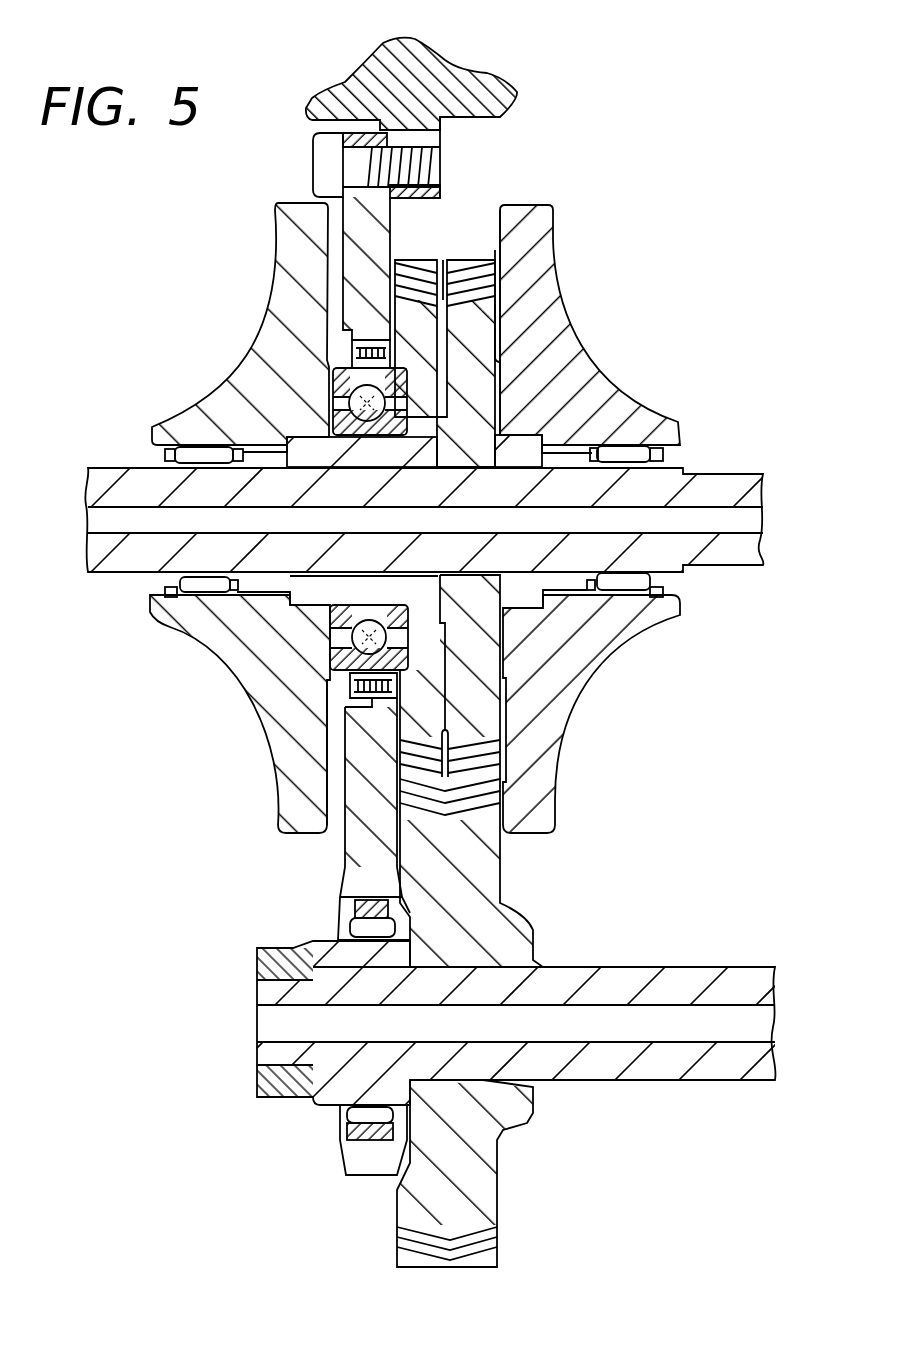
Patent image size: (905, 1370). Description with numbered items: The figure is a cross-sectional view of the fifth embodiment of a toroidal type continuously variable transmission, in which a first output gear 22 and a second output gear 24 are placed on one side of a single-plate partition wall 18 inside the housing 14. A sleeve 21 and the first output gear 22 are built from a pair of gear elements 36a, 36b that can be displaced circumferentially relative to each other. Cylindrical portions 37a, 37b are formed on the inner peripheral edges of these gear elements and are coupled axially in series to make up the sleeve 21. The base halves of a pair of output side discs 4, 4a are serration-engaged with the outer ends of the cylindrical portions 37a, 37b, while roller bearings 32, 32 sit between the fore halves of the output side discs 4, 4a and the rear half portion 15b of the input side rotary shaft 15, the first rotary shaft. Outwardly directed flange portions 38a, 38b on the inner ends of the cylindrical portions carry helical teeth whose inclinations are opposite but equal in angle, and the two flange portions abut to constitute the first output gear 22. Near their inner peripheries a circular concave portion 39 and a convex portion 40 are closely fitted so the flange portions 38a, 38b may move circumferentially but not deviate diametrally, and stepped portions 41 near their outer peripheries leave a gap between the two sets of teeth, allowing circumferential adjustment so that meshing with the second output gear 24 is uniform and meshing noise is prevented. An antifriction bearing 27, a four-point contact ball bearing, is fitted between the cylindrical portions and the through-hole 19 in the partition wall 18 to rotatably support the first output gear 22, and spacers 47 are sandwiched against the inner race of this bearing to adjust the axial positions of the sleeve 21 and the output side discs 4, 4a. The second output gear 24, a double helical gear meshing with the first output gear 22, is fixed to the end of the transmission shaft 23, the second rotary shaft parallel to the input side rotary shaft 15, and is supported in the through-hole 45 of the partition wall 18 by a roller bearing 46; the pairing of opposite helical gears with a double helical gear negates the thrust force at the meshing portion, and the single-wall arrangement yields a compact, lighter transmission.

The housing 14 is at (470, 80).
The partition wall 18 is at (360, 208).
The gear element 36a is at (413, 317).
The stepped portion 41 is at (445, 310).
The first output gear 22 is at (503, 270).
The output side disc 4 is at (540, 297).
The fixed pulley half 4a is at (267, 315).
The flange portion 38b is at (478, 340).
The flange portion 38a is at (440, 705).
The sleeve 21 is at (530, 422).
The input side rotary shaft 15 is at (696, 483).
The rear half portion 15b is at (723, 557).
The roller bearing 32 is at (168, 447).
The cylindrical portion 37a is at (212, 452).
The cylindrical portion 37b is at (545, 620).
The circular concave portion 39 is at (445, 600).
The convex portion 40 is at (437, 580).
The spacer 47 is at (335, 395).
The antifriction bearing 27 is at (500, 635).
The through-hole 19 is at (440, 665).
The through-hole 45 is at (337, 917).
The second output gear 24 is at (485, 865).
The gear element 36b is at (480, 693).
The transmission shaft 23 is at (633, 972).
The roller bearing 46 is at (340, 1123).